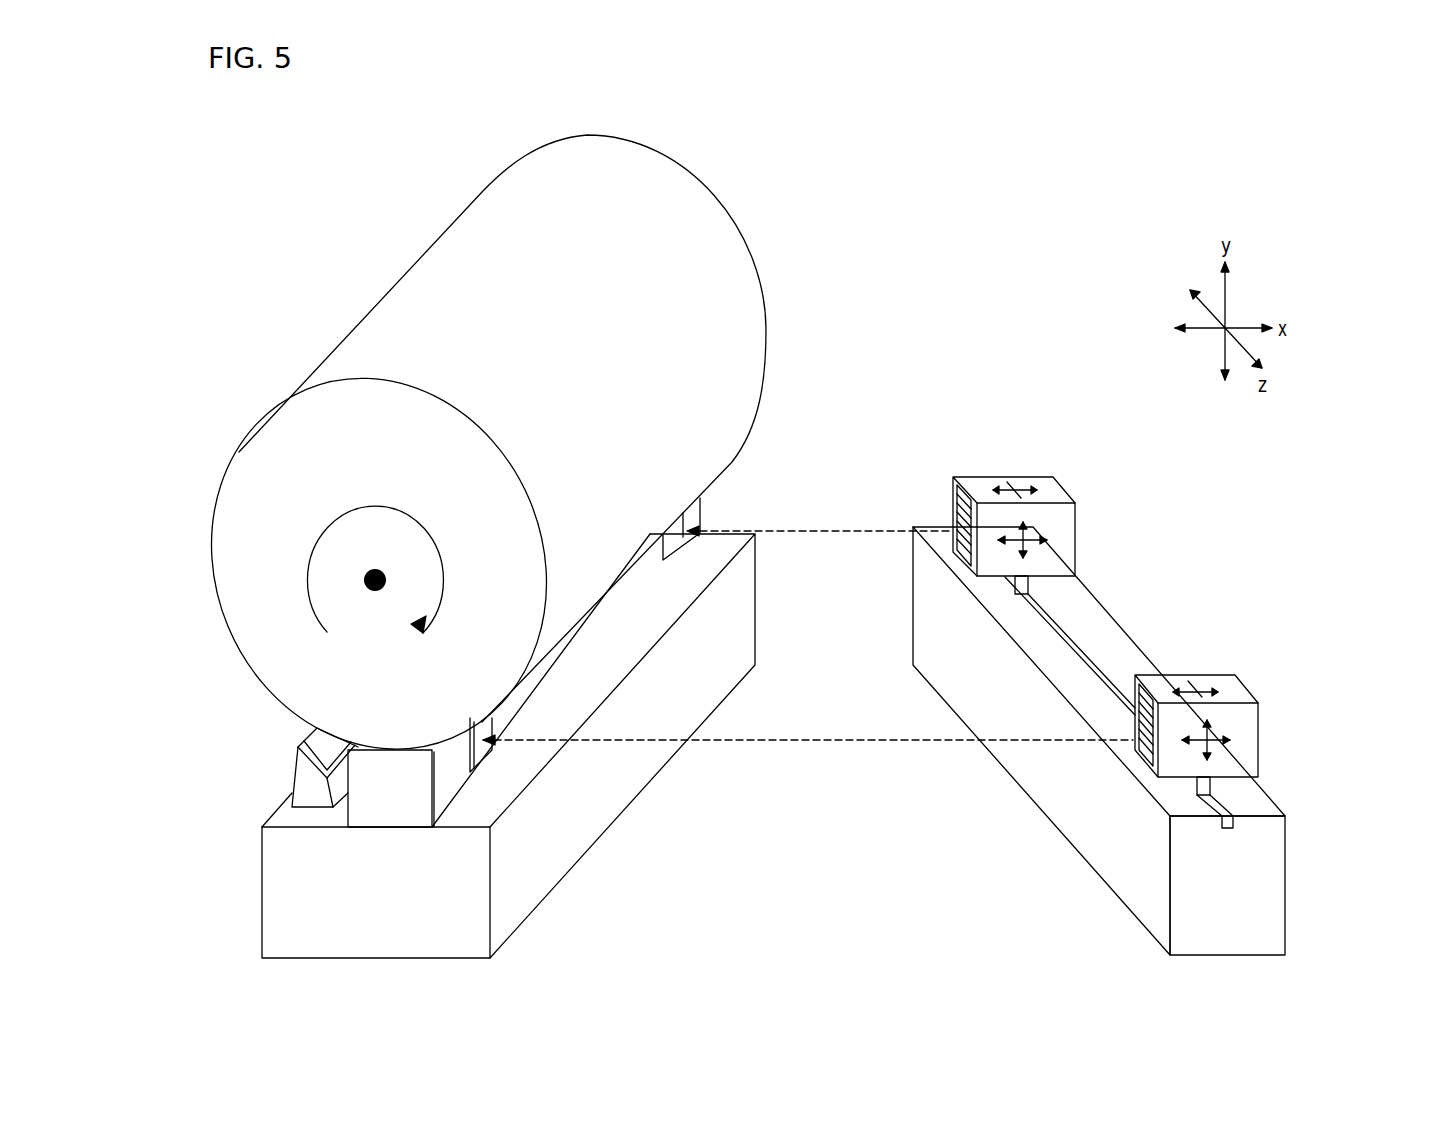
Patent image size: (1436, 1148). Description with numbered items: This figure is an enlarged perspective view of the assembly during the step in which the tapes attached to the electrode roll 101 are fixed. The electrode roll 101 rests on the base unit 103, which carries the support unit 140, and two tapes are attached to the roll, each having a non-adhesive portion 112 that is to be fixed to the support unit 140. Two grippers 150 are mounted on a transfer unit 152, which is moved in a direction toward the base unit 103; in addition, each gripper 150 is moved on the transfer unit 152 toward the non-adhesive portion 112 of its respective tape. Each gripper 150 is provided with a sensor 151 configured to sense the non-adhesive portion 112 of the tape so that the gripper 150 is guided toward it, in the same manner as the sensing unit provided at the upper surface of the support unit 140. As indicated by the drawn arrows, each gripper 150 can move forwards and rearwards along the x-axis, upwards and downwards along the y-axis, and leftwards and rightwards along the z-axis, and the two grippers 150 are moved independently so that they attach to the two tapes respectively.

The electrode roll 101 is at (448, 262).
The base unit 103 is at (540, 858).
The non-adhesive portion 112 is at (473, 750).
The support unit 140 is at (570, 650).
The gripper 150 is at (1067, 541).
The sensor 151 is at (965, 518).
The transfer unit 152 is at (1035, 760).